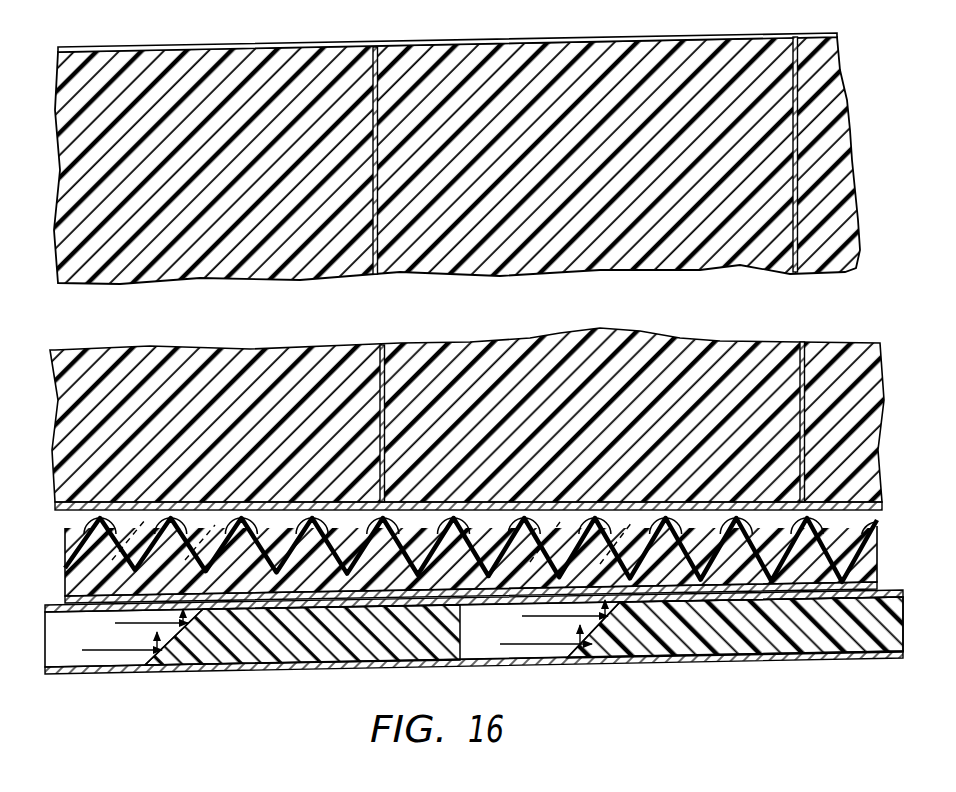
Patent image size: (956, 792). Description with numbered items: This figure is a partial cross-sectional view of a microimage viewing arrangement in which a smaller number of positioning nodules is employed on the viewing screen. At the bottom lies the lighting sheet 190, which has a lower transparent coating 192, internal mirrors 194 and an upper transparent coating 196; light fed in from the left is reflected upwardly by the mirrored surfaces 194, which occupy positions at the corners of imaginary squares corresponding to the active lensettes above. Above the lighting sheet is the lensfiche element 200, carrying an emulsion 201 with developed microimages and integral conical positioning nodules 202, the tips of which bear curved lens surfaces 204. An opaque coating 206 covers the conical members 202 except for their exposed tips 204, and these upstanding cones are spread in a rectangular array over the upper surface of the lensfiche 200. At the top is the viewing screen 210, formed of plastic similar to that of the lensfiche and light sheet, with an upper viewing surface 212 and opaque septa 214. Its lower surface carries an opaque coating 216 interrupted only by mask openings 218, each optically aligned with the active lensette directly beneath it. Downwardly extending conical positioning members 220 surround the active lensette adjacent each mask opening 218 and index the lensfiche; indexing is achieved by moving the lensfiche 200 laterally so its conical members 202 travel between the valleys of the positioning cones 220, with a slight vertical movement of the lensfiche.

The lighting sheet 190 is at (474, 654).
The lower transparent coating 192 is at (742, 660).
The internal mirrors 194 is at (177, 643).
The upper transparent coating 196 is at (880, 592).
The lensfiche element 200 is at (858, 572).
The emulsion 201 is at (836, 584).
The conical positioning nodules 202 is at (493, 510).
The curved lens surfaces 204 is at (803, 520).
The opaque coating 206 is at (700, 540).
The viewing screen 210 is at (711, 128).
The upper viewing surface 212 is at (566, 34).
The opaque septa 214 is at (378, 180).
The opaque coating 216 is at (119, 506).
The mask openings 218 is at (158, 532).
The conical positioning members 220 is at (152, 520).